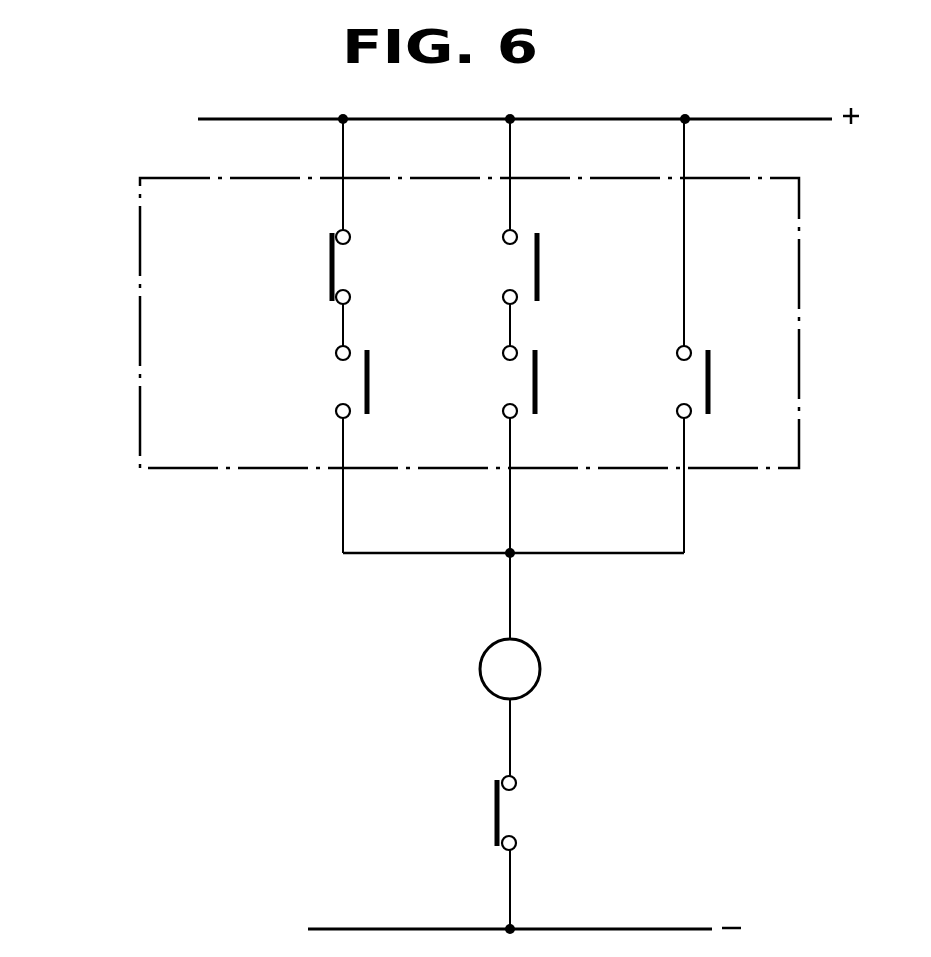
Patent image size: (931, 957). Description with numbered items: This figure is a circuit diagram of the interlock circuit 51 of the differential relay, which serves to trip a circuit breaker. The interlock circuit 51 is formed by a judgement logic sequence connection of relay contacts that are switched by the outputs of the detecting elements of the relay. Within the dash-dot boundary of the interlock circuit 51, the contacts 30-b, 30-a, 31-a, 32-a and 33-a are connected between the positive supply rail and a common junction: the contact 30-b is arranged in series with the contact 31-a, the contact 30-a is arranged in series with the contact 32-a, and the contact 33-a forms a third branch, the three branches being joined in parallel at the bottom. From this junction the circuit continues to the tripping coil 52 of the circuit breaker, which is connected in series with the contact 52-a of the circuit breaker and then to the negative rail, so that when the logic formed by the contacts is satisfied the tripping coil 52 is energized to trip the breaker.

The interlock circuit 51 is at (142, 342).
The contact 30-b is at (335, 268).
The contact 30-a is at (537, 286).
The contact 31-a is at (369, 400).
The contact 32-a is at (537, 400).
The contact 33-a is at (710, 400).
The tripping coil 52 is at (540, 669).
The contact of the circuit breaker 52-a is at (512, 812).